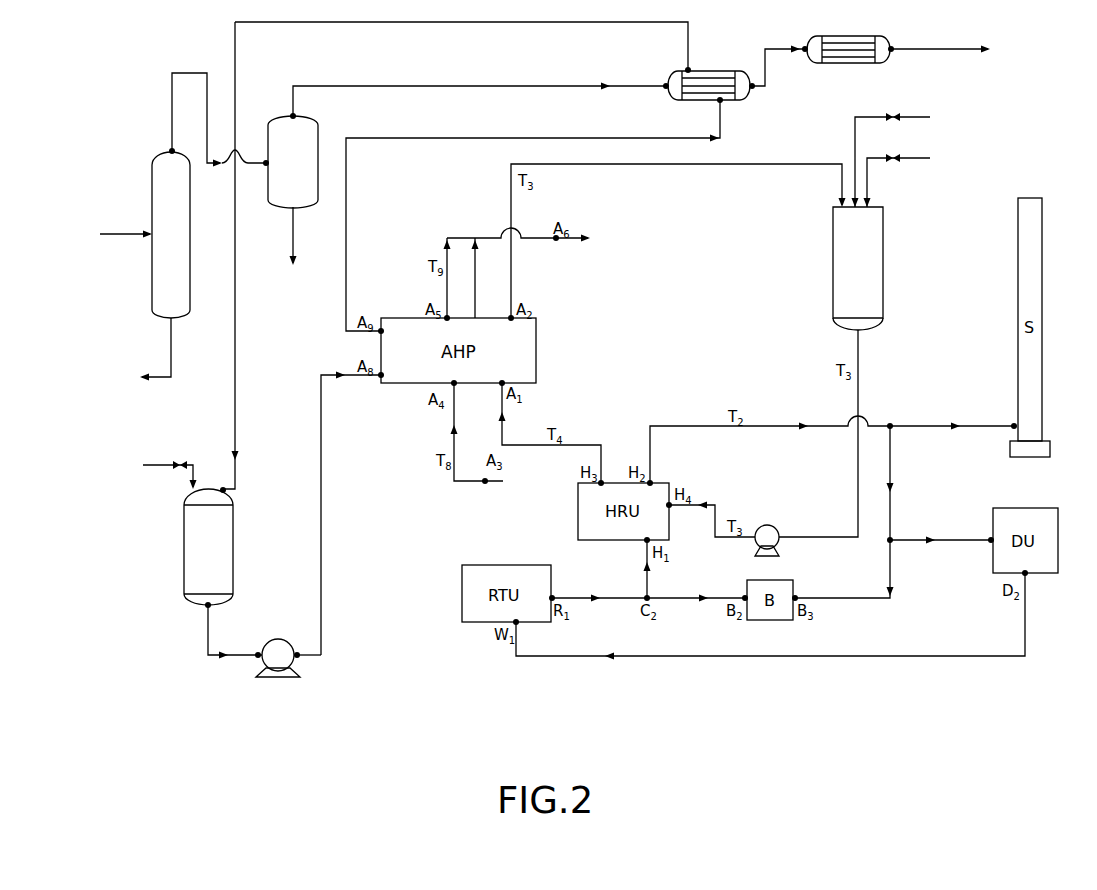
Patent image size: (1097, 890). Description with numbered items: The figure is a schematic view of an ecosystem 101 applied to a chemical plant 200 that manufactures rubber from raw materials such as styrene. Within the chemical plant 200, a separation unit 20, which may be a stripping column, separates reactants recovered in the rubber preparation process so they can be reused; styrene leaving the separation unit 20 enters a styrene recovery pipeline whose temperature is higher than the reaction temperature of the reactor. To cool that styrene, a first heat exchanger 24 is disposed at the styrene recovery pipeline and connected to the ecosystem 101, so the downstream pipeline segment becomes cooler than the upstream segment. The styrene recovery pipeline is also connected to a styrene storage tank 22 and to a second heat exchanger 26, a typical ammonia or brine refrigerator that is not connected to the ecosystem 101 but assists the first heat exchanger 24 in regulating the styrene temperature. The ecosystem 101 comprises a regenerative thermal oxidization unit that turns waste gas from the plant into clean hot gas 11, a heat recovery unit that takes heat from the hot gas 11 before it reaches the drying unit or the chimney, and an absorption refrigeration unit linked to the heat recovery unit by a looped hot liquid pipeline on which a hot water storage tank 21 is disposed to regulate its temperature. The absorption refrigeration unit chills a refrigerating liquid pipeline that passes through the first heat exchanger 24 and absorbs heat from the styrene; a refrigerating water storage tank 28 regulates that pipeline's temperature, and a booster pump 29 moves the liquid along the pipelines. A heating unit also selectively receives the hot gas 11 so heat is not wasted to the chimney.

The chemical plant 200 is at (132, 94).
The separation unit 20 is at (184, 227).
The styrene storage tank 22 is at (466, 145).
The first heat exchanger 24 is at (707, 70).
The second heat exchanger 26 is at (859, 35).
The hot water storage tank 21 is at (881, 221).
The refrigerating water storage tank 28 is at (202, 560).
The booster pump 29 is at (288, 614).
The ecosystem 101 is at (745, 278).
The hot gas 11 is at (599, 590).